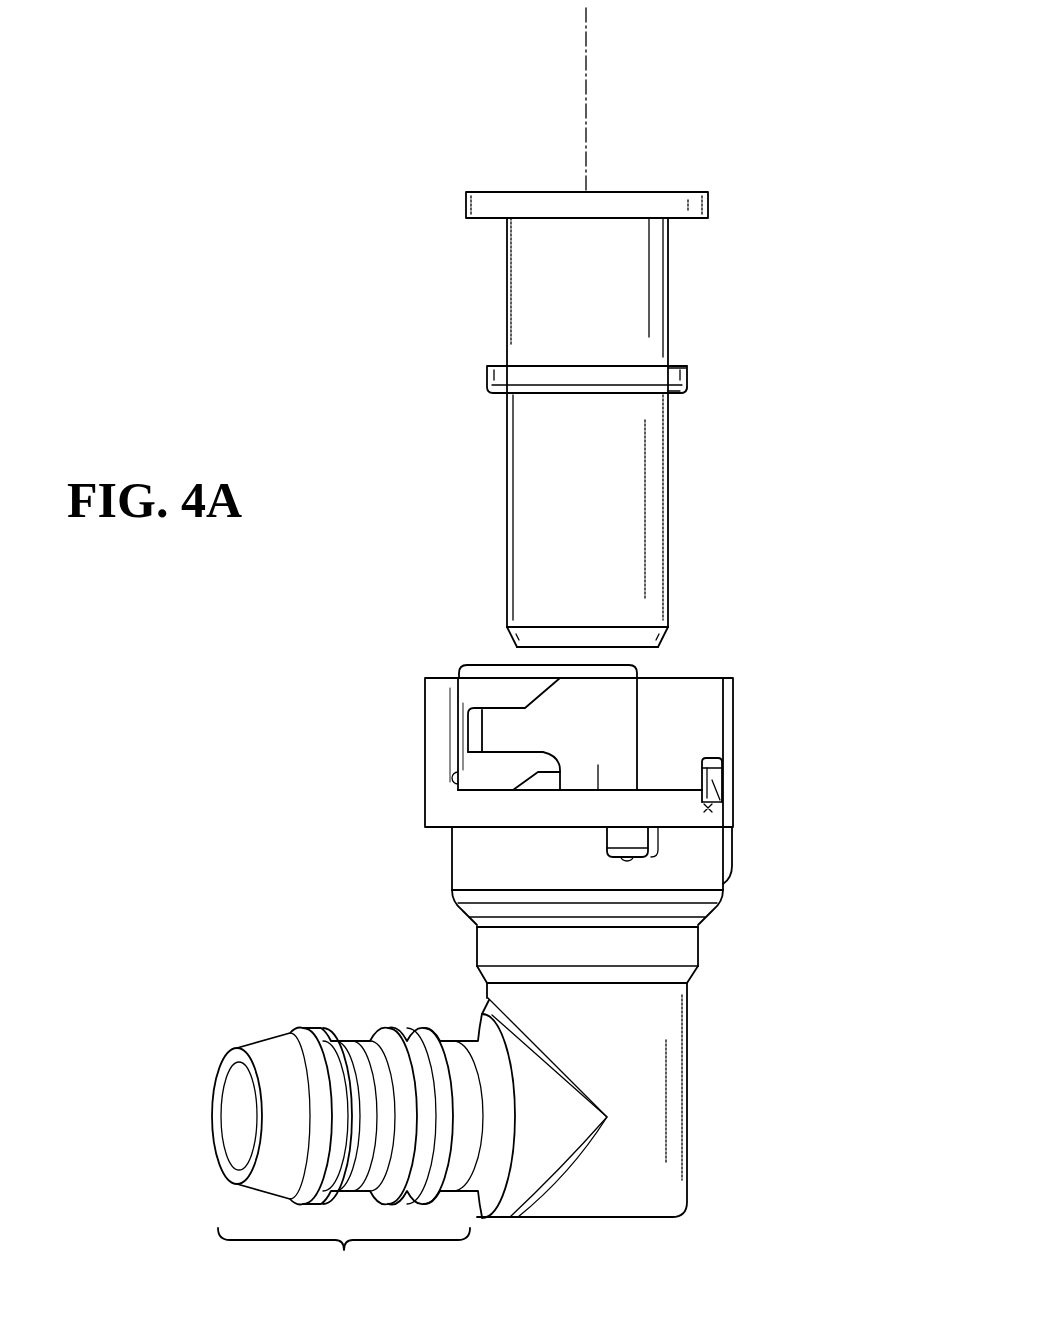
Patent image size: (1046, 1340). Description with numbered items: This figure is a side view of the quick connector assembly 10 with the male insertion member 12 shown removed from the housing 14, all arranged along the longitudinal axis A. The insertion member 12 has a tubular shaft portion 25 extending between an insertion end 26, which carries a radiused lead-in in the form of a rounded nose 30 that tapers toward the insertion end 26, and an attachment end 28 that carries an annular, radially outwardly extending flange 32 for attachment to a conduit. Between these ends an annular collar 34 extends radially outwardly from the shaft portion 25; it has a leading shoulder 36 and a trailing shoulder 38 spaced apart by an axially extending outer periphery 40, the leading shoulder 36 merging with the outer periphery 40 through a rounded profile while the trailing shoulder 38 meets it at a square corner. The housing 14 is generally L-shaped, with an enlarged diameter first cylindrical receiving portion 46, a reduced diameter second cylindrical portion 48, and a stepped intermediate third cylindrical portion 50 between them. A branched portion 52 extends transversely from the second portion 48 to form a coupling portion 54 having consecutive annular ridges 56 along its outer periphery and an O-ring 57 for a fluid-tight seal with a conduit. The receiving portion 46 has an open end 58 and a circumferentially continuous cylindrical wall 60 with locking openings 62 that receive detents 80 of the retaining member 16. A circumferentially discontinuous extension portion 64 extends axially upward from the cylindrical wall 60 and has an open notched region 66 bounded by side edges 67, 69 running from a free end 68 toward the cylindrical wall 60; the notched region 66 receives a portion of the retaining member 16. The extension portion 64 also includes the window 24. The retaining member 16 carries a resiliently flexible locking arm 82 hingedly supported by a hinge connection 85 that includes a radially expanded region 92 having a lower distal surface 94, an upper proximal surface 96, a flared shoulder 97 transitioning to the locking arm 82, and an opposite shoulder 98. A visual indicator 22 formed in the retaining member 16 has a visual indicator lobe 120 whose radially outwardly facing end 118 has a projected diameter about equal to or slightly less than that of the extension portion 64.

The quick connector assembly 10 is at (741, 140).
The longitudinal axis A is at (589, 67).
The male insertion member 12 is at (729, 197).
The attachment end 28 is at (486, 192).
The flange 32 is at (467, 204).
The tubular shaft portion 25 is at (530, 290).
The outer periphery 40 is at (690, 380).
The annular collar 34 is at (487, 378).
The trailing shoulder 38 is at (684, 367).
The leading shoulder 36 is at (688, 395).
The rounded nose 30 is at (517, 643).
The insertion end 26 is at (538, 653).
The housing 14 is at (746, 675).
The free end 68 is at (436, 678).
The extension portion 64 is at (727, 700).
The retaining member 16 is at (690, 668).
The notched region 66 is at (566, 667).
The side edge 69 is at (636, 696).
The side edge 67 is at (457, 790).
The flared shoulder 97 is at (547, 690).
The locking arm 82 is at (476, 731).
The hinge connection 85 is at (567, 723).
The upper proximal surface 96 is at (573, 670).
The shoulder 98 is at (637, 756).
The lower distal surface 94 is at (572, 790).
The radially expanded region 92 is at (598, 790).
The open end 58 is at (670, 788).
The window 24 is at (712, 760).
The visual indicator lobe 120 is at (718, 777).
The radially outwardly facing end 118 is at (723, 778).
The visual indicator 22 is at (708, 810).
The cylindrical wall 60 is at (452, 866).
The detent 80 is at (618, 838).
The locking opening 62 is at (627, 858).
The first cylindrical receiving portion 46 is at (720, 875).
The third cylindrical portion 50 is at (683, 945).
The second cylindrical portion 48 is at (660, 1005).
The coupling portion 54 is at (363, 1141).
The O-ring 57 is at (328, 1040).
The branched portion 52 is at (367, 1044).
The annular ridges 56 is at (386, 1043).